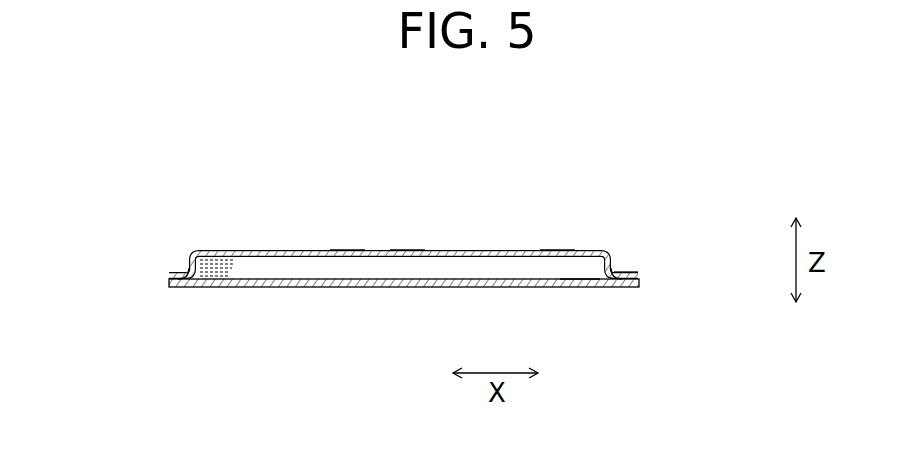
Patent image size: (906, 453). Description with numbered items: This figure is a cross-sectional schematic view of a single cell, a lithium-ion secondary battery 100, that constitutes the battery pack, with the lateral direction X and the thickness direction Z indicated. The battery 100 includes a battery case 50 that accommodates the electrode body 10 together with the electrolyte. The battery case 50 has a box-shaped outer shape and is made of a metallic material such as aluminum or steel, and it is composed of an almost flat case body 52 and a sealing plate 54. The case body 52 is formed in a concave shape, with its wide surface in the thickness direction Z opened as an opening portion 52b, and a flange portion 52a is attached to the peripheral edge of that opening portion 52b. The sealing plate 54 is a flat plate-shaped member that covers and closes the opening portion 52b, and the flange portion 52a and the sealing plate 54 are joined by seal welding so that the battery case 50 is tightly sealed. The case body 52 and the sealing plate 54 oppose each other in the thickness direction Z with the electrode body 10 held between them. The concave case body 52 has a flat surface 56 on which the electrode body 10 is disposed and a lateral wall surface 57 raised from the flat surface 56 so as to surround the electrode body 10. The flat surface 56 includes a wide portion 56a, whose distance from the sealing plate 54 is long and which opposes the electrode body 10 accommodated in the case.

The single cell (lithium-ion secondary battery) 100 is at (659, 158).
The electrode body 10 is at (234, 262).
The battery case 50 is at (558, 247).
The case body 52 is at (288, 249).
The flange portion 52a is at (632, 273).
The opening portion 52b is at (580, 273).
The sealing plate 54 is at (360, 288).
The flat surface 56 is at (347, 249).
The wide portion 56a is at (407, 250).
The lateral wall surface 57 is at (622, 266).